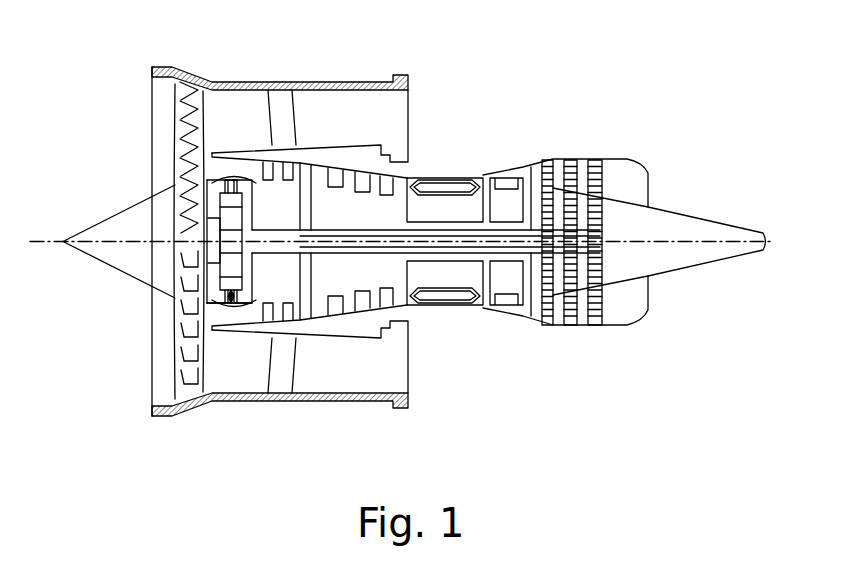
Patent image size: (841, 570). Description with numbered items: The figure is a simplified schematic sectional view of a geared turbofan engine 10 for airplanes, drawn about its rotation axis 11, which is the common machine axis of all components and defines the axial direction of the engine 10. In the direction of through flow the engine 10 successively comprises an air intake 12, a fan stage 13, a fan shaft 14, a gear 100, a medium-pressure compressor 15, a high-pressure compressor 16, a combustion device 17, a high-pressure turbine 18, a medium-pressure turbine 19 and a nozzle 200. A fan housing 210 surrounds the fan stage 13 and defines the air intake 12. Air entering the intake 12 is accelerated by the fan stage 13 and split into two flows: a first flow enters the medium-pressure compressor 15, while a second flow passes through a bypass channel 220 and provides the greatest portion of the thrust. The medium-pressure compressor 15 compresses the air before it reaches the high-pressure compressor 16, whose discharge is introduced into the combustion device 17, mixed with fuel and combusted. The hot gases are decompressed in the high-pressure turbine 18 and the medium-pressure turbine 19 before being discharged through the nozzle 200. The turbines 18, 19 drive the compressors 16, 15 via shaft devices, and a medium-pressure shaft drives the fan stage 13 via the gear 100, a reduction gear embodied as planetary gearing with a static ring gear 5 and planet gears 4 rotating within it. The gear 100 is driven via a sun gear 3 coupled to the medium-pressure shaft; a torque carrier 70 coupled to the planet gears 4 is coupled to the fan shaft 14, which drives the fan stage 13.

The geared turbofan engine 10 is at (650, 92).
The rotation axis 11 is at (47, 241).
The air intake 12 is at (131, 105).
The fan stage 13 is at (177, 353).
The fan shaft 14 is at (217, 233).
The medium-pressure compressor 15 is at (279, 147).
The high-pressure compressor 16 is at (398, 200).
The combustion device 17 is at (445, 298).
The high-pressure turbine 18 is at (527, 175).
The medium-pressure turbine 19 is at (570, 160).
The nozzle 200 is at (643, 192).
The fan housing 210 is at (350, 82).
The bypass channel 220 is at (397, 107).
The sun gear 3 is at (217, 253).
The planet gears 4 is at (230, 265).
The ring gear 5 is at (228, 200).
The torque carrier 70 is at (217, 303).
The gear 100 is at (222, 303).